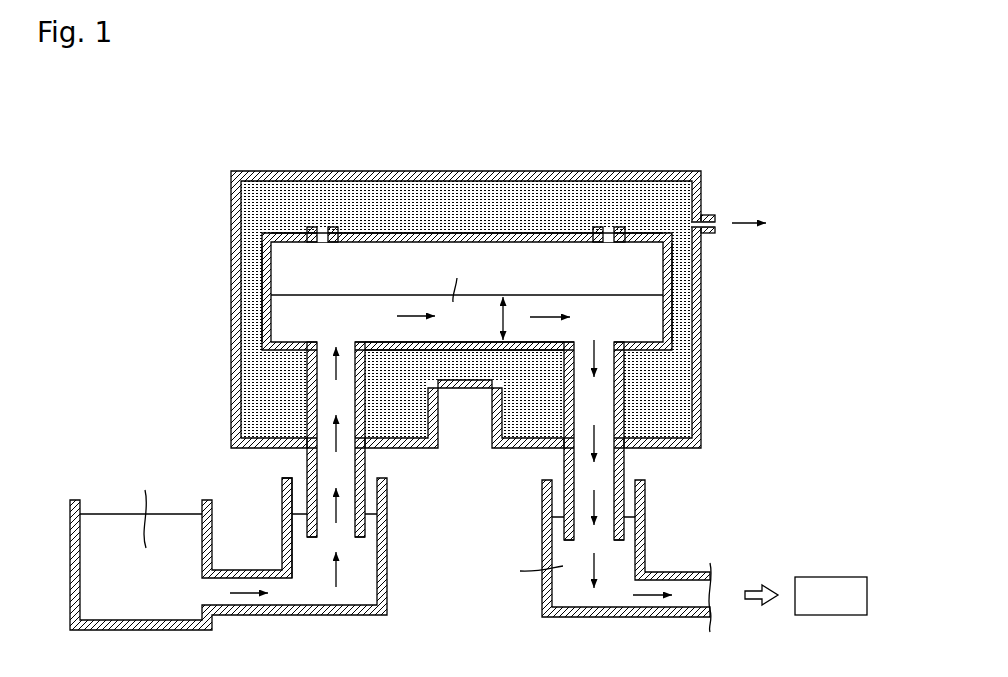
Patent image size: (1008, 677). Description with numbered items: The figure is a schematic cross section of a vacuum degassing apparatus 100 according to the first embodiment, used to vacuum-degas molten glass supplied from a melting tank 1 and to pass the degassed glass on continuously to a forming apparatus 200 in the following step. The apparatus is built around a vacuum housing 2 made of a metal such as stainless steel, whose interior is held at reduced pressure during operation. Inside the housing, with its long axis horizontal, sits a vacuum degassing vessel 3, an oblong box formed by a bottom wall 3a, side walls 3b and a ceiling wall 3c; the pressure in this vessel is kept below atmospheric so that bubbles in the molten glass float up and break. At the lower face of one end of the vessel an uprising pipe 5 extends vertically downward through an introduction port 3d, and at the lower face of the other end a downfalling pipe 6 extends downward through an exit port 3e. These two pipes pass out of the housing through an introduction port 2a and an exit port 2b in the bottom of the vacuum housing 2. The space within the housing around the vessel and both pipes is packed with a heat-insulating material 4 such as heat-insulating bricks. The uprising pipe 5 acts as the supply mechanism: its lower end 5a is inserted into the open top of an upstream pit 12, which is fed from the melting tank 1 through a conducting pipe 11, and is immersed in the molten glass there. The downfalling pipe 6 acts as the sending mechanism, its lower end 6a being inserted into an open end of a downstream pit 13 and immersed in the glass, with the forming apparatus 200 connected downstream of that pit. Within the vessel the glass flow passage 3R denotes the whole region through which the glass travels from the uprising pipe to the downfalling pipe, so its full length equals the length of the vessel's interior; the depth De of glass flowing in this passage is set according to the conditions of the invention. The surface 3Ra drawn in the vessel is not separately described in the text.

The vacuum degassing apparatus 100 is at (469, 343).
The melting tank 1 is at (70, 503).
The vacuum housing 2 is at (231, 208).
The introduction port 2a is at (367, 447).
The exit port 2b is at (563, 448).
The vacuum degassing vessel 3 is at (262, 278).
The bottom wall 3a is at (458, 352).
The side walls 3b is at (265, 311).
The ceiling wall 3c is at (452, 242).
The introduction port 3d is at (262, 364).
The exit port 3e is at (627, 367).
The glass flow passage 3R is at (373, 292).
The inner bottom surface of vacuum degassing vessel 3Ra is at (522, 341).
The heat-insulating material 4 is at (681, 315).
The uprising pipe 5 is at (306, 403).
The lower end of uprising pipe 5a is at (366, 531).
The downfalling pipe 6 is at (627, 408).
The lower end of downfalling pipe 6a is at (624, 532).
The conducting pipe 11 is at (247, 571).
The upstream pit 12 is at (283, 489).
The downstream pit 13 is at (645, 490).
The forming apparatus 200 is at (830, 572).